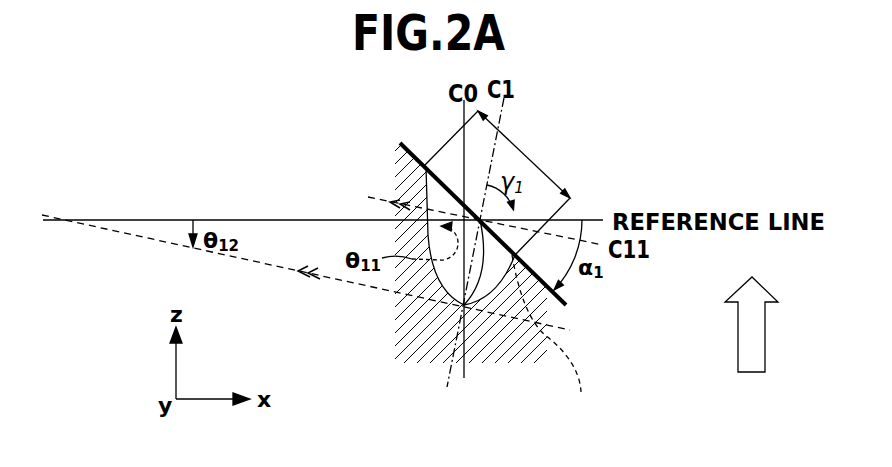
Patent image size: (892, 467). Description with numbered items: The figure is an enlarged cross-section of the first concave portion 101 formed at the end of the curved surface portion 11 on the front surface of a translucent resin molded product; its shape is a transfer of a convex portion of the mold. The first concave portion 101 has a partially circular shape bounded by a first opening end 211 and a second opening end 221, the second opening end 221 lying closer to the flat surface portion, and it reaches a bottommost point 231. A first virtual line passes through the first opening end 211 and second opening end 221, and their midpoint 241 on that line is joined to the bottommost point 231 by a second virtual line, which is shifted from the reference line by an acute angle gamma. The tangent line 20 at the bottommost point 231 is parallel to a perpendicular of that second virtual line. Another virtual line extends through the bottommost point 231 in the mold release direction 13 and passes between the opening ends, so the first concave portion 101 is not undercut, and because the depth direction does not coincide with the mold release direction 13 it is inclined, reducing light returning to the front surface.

The first concave portion 101 is at (583, 147).
The curved surface portion 11 is at (547, 400).
The mold release direction 13 is at (766, 333).
The tangent line 20 is at (322, 282).
The first opening end 211 is at (556, 339).
The second opening end 221 is at (408, 177).
The bottommost point 231 is at (477, 300).
The midpoint 241 is at (445, 291).